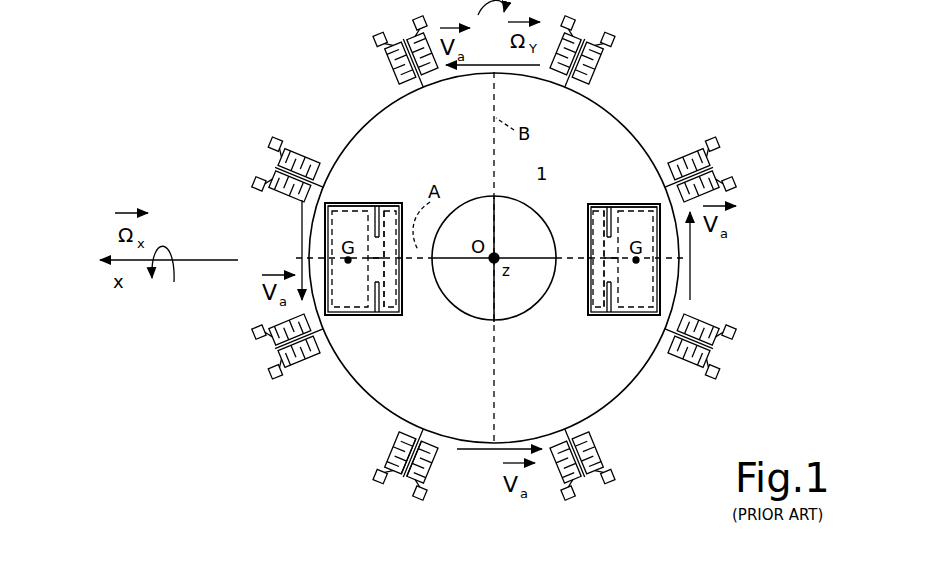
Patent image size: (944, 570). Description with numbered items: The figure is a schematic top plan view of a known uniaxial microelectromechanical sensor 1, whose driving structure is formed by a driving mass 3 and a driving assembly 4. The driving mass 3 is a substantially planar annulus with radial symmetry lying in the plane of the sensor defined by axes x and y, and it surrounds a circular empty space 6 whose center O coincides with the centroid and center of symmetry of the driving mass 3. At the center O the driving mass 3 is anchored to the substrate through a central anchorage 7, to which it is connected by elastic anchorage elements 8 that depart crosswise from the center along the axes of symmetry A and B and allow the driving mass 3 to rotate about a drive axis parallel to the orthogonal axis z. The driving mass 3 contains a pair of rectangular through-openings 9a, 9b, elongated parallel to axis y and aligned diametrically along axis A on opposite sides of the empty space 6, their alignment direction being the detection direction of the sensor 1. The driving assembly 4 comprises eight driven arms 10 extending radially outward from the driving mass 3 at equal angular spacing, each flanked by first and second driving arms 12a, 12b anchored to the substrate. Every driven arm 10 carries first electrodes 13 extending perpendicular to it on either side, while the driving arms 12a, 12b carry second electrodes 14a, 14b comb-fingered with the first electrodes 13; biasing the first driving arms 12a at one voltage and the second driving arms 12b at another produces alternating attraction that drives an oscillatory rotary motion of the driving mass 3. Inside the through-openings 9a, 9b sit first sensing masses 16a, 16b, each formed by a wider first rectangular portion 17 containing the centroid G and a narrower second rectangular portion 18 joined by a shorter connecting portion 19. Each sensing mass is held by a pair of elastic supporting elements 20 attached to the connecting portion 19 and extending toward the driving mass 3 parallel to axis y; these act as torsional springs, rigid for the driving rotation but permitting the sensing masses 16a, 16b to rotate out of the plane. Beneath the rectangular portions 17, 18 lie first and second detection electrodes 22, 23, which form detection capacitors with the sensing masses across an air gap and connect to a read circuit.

The microelectromechanical sensor 1 is at (699, 88).
The driving mass 3 is at (400, 115).
The driving assembly 4 is at (355, 460).
The circular empty space 6 is at (530, 294).
The central anchorage 7 is at (498, 254).
The elastic anchorage elements 8 is at (490, 221).
The through-opening 9a is at (342, 300).
The through-opening 9b is at (651, 305).
The driven arms 10 is at (413, 453).
The first driving arms 12a is at (383, 475).
The second driving arms 12b is at (419, 490).
The first electrodes 13 is at (411, 457).
The second electrodes 14a is at (400, 453).
The second electrodes 14b is at (422, 462).
The first sensing mass 16a is at (372, 202).
The first sensing mass 16b is at (627, 202).
The first rectangular portion 17 is at (342, 203).
The second rectangular portion 18 is at (391, 205).
The connecting portion 19 is at (380, 248).
The elastic supporting elements 20 is at (378, 313).
The first detection electrode 22 is at (352, 300).
The second detection electrode 23 is at (401, 303).